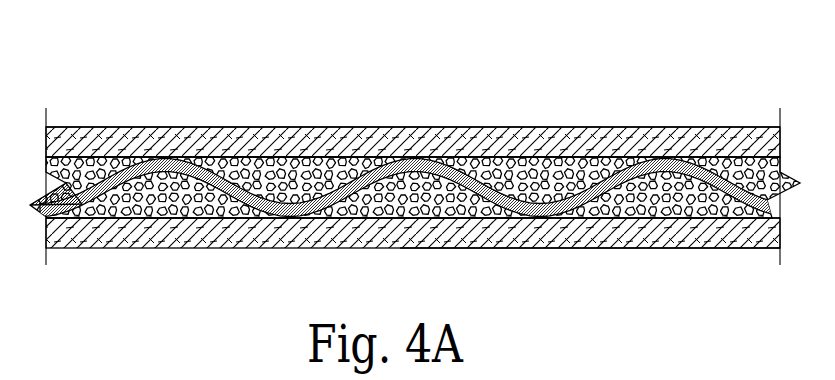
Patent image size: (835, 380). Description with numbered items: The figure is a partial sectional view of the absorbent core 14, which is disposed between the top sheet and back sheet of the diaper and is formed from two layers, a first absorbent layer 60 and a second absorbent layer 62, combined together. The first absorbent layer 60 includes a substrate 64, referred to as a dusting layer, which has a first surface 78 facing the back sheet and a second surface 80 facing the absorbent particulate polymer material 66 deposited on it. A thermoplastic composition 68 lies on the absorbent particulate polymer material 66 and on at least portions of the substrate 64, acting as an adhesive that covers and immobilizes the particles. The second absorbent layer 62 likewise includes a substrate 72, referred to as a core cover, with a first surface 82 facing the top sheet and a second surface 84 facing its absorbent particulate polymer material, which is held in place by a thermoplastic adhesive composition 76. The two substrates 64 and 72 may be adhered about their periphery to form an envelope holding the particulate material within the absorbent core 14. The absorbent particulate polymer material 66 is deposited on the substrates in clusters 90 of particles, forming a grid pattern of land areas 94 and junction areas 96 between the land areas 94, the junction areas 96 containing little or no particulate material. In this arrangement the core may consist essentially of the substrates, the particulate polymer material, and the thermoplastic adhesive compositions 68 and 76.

The absorbent core 14 is at (80, 106).
The first absorbent layer 60 is at (676, 258).
The second absorbent layer 62 is at (538, 118).
The substrate 64 is at (621, 249).
The absorbent particulate polymer material 66 is at (128, 214).
The thermoplastic composition 68 is at (163, 174).
The substrate 72 is at (650, 145).
The thermoplastic adhesive composition 76 is at (235, 158).
The first surface 78 is at (742, 249).
The second surface 80 is at (717, 165).
The first surface 82 is at (159, 127).
The second surface 84 is at (288, 158).
The clusters 90 is at (580, 172).
The land areas 94 is at (414, 160).
The junction areas 96 is at (547, 219).